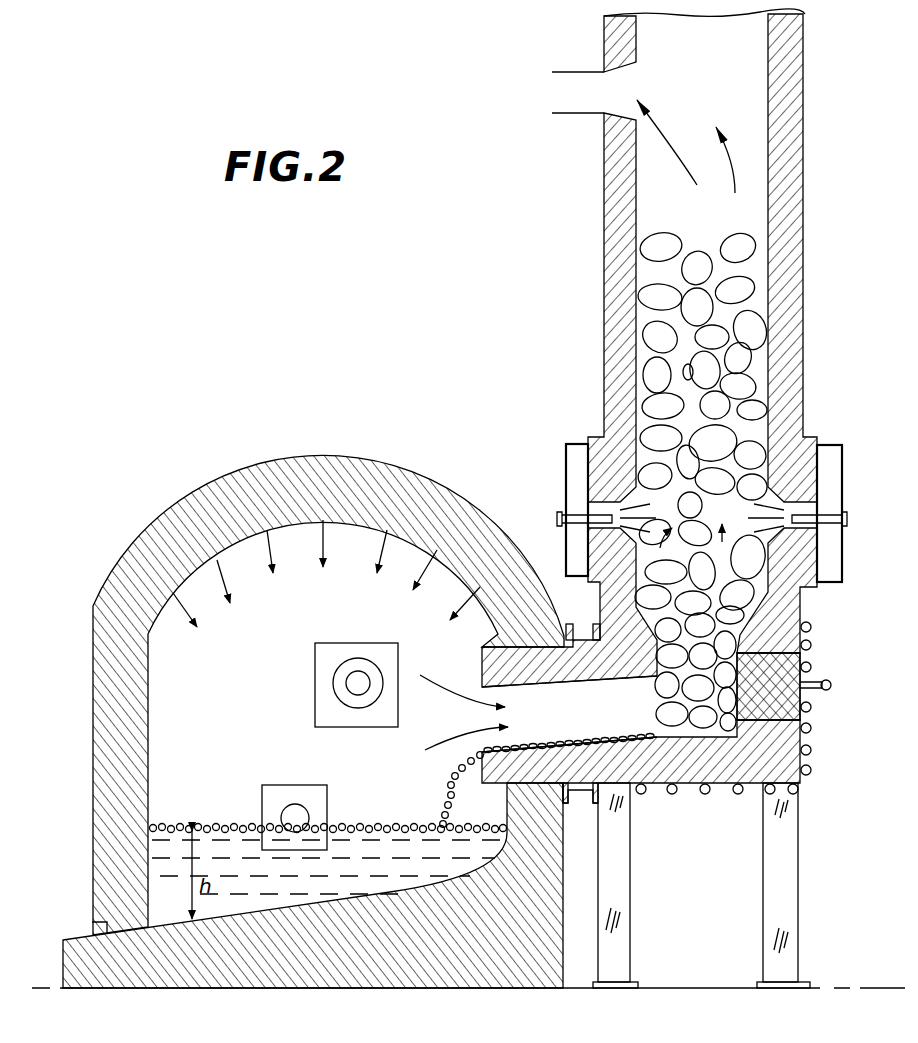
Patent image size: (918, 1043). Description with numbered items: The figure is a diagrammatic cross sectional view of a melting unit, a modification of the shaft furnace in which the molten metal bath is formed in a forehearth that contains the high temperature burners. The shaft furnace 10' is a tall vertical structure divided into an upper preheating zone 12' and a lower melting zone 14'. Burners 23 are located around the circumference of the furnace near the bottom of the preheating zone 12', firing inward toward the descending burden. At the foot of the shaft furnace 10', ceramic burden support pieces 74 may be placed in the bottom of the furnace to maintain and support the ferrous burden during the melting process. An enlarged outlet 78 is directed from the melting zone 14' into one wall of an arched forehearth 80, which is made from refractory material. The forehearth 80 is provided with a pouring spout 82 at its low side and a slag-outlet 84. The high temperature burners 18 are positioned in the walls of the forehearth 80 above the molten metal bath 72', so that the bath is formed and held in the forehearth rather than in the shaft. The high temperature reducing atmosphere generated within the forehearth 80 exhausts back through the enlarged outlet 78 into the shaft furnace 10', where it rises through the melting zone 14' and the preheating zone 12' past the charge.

The shaft furnace 10' is at (676, 255).
The preheating zone 12' is at (583, 307).
The melting zone 14' is at (672, 758).
The high temperature burners 18 is at (372, 677).
The burners 23 is at (850, 518).
The molten metal bath 72' is at (328, 859).
The ceramic burden support pieces 74 is at (688, 738).
The enlarged outlet 78 is at (588, 683).
The arched forehearth 80 is at (93, 665).
The pouring spout 82 is at (92, 930).
The slag-outlet 84 is at (327, 805).